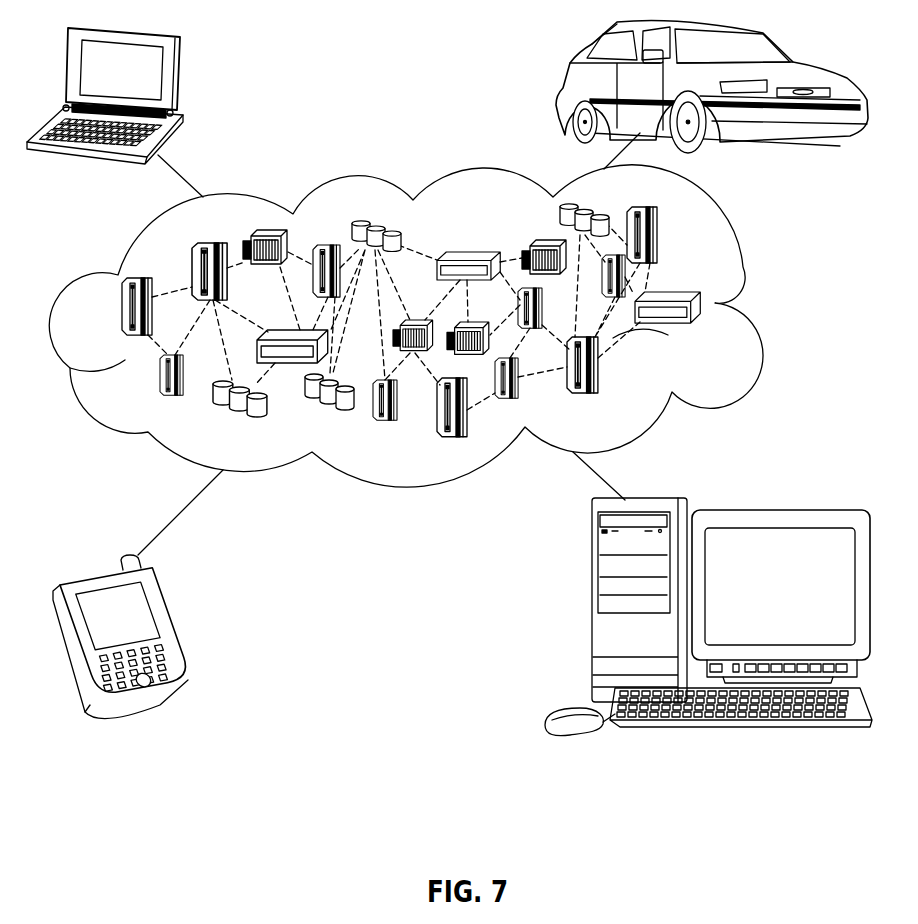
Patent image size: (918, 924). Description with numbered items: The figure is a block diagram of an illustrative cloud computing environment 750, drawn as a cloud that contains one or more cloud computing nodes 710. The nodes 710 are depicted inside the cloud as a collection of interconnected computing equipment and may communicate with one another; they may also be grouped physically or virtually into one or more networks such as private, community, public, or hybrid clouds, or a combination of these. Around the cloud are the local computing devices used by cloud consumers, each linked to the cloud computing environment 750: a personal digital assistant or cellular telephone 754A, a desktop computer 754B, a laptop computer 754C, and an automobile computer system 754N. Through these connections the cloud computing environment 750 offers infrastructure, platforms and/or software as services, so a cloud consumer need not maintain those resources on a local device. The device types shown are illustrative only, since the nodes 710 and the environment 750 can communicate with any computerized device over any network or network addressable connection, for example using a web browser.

The cloud computing environment 750 is at (743, 268).
The cloud computing nodes 710 is at (722, 328).
The personal digital assistant or cellular telephone 754A is at (173, 630).
The desktop computer 754B is at (592, 608).
The laptop computer 754C is at (180, 75).
The automobile computer system 754N is at (562, 78).